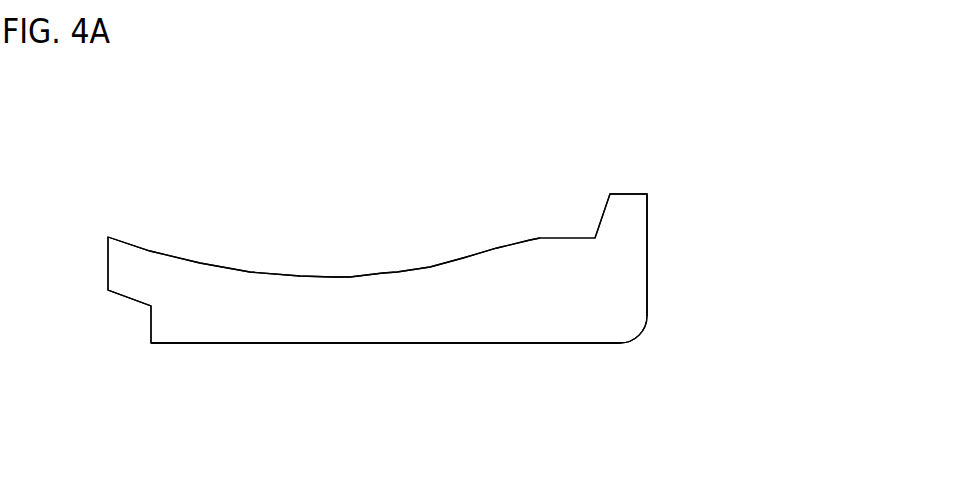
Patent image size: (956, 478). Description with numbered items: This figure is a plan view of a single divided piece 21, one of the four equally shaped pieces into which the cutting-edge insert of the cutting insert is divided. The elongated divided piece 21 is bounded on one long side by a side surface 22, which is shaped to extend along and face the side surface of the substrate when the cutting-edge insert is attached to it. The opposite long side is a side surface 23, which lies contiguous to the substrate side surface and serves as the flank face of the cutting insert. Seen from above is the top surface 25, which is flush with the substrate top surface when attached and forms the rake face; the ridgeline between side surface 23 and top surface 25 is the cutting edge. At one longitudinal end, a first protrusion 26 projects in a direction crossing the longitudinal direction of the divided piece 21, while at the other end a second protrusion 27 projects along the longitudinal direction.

The divided piece 21 is at (668, 108).
The side surface 22 is at (382, 275).
The side surface 23 is at (324, 345).
The top surface 25 is at (418, 322).
The first protrusion 26 is at (627, 209).
The second protrusion 27 is at (129, 285).